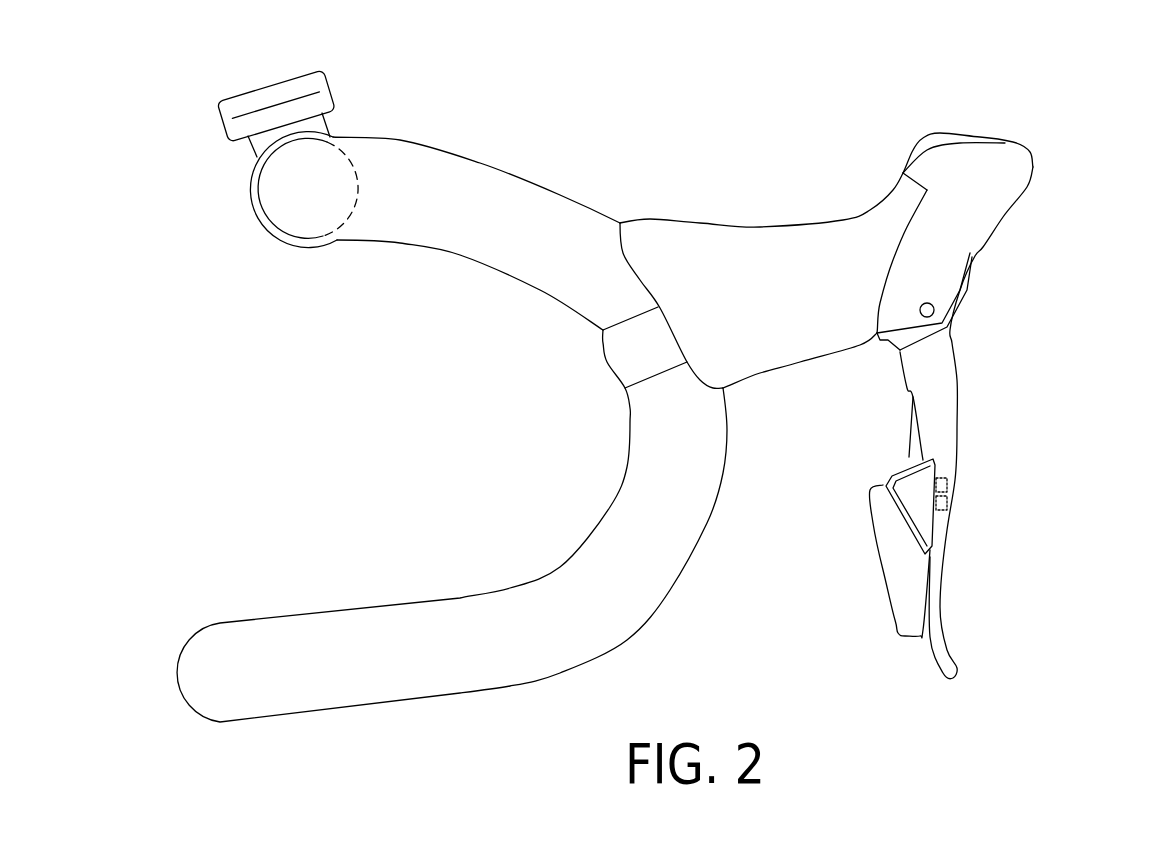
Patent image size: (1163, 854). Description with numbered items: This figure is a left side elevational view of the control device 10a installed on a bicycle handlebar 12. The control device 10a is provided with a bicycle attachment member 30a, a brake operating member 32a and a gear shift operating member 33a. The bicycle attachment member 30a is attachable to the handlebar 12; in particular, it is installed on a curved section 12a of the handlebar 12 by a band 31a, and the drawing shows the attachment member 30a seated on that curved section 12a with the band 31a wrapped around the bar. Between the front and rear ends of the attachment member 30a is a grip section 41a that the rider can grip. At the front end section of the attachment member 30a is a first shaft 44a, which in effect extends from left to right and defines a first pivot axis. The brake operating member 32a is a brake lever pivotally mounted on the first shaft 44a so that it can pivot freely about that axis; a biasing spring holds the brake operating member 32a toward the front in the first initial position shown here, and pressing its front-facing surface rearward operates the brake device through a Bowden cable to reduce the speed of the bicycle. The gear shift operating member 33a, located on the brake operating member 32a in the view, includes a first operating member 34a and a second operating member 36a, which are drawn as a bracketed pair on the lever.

The handlebar 12 is at (416, 135).
The curved section 12a is at (718, 441).
The control device 10a is at (885, 126).
The bicycle attachment member 30a is at (819, 230).
The grip section 41a is at (762, 250).
The first shaft 44a is at (927, 303).
The brake operating member 32a is at (933, 367).
The band 31a is at (643, 348).
The gear shift operating member 33a is at (806, 561).
The second operating member 36a is at (908, 493).
The first operating member 34a is at (892, 572).